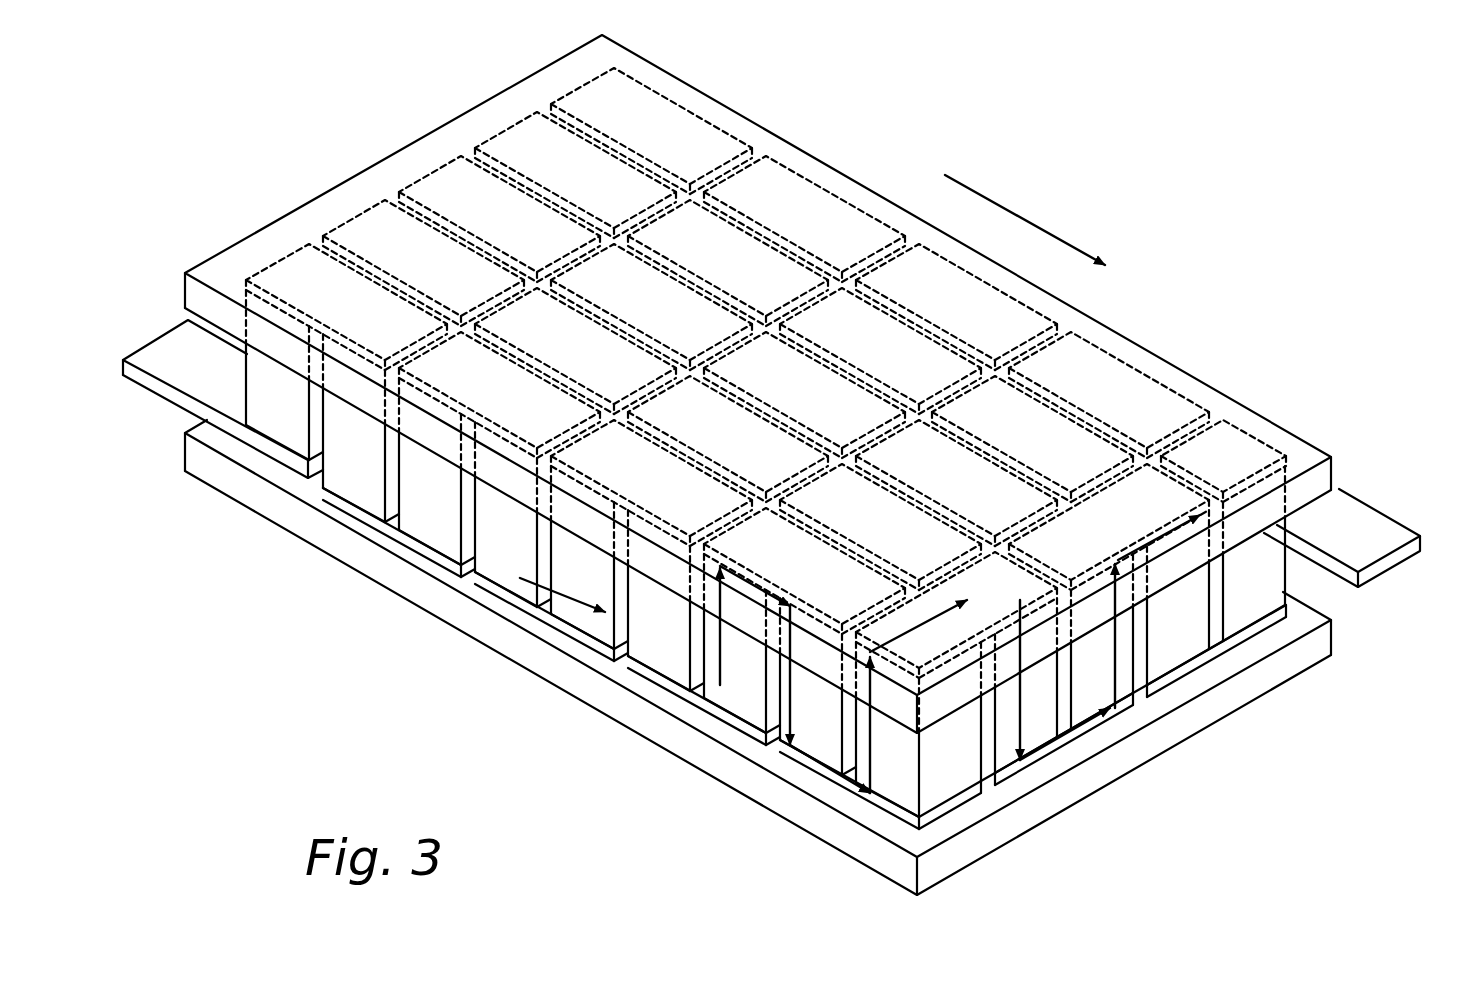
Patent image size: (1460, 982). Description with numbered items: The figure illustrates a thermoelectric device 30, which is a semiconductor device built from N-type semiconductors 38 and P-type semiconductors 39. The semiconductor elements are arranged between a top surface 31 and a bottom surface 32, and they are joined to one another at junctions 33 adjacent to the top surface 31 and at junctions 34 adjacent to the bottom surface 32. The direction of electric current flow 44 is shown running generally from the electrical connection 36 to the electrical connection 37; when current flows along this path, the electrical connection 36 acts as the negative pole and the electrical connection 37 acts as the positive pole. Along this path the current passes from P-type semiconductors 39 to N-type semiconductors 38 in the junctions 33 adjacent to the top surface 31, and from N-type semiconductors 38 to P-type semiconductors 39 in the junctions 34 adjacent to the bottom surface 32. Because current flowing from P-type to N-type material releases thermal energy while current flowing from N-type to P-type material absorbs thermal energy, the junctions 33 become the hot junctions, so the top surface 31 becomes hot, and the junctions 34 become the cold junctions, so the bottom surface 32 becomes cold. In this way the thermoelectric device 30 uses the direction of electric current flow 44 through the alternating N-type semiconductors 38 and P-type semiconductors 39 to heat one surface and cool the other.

The thermoelectric device 30 is at (771, 465).
The top surface 31 is at (512, 122).
The bottom surface 32 is at (683, 757).
The junctions 33 is at (330, 327).
The junctions 34 is at (395, 510).
The electrical connection 36 is at (165, 355).
The electrical connection 37 is at (1360, 518).
The N-type semiconductors 38 is at (500, 566).
The P-type semiconductors 39 is at (577, 612).
The direction of electric current flow 44 is at (520, 585).